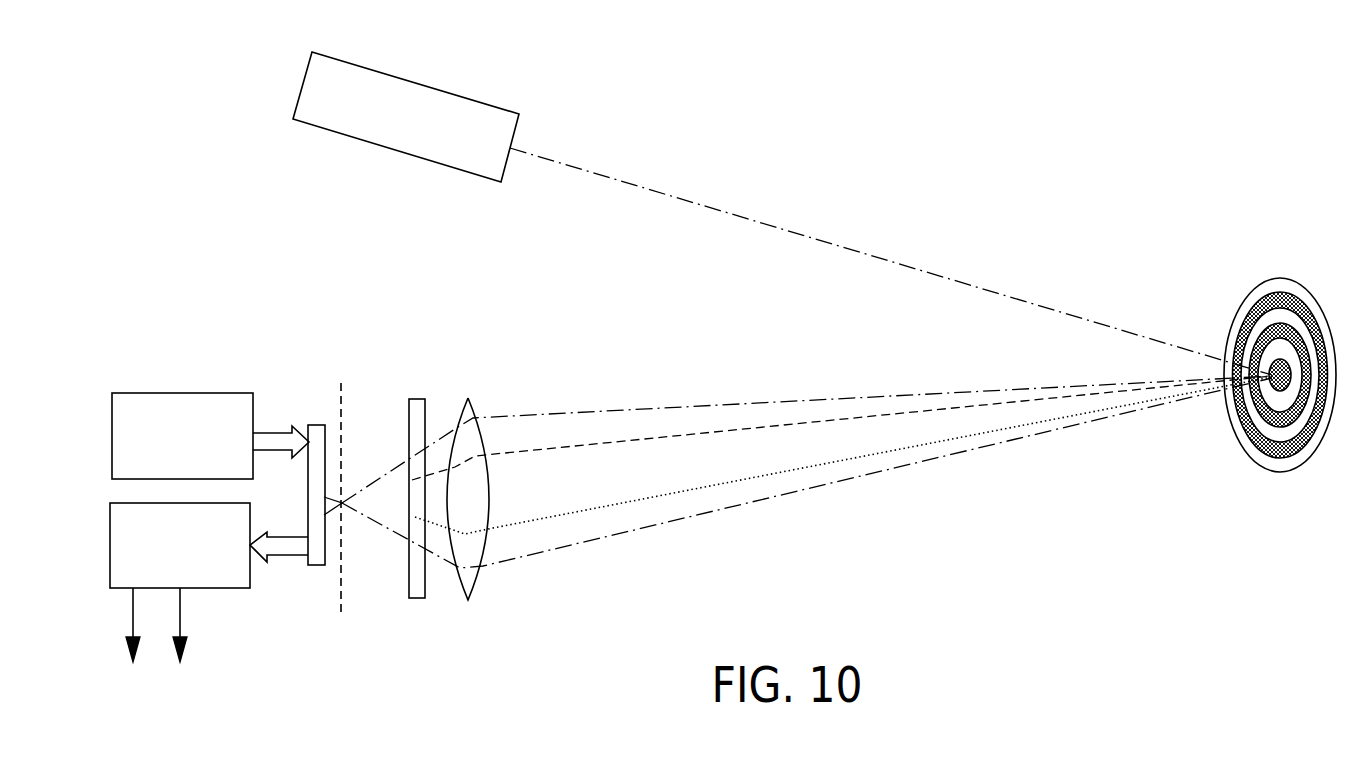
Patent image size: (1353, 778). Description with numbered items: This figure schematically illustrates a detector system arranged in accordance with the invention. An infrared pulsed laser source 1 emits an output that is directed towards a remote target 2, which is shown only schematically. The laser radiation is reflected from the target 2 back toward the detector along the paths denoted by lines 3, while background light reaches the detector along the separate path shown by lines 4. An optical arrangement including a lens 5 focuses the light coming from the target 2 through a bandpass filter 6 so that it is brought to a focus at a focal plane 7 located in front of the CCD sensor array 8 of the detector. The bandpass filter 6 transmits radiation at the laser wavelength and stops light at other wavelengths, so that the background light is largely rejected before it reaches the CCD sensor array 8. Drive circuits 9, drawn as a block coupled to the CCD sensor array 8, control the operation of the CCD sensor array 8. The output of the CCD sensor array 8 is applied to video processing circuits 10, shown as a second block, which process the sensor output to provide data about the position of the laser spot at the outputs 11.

The infrared pulsed laser source 1 is at (410, 94).
The remote target 2 is at (1279, 317).
The lines denoting reflected laser radiation 3 is at (988, 388).
The lines denoting background light path 4 is at (812, 422).
The lens 5 is at (466, 602).
The bandpass filter 6 is at (413, 600).
The focal plane 7 is at (338, 612).
The CCD sensor array 8 is at (318, 425).
The drive circuits 9 is at (185, 393).
The video processing circuits 10 is at (228, 590).
The outputs 11 is at (132, 633).